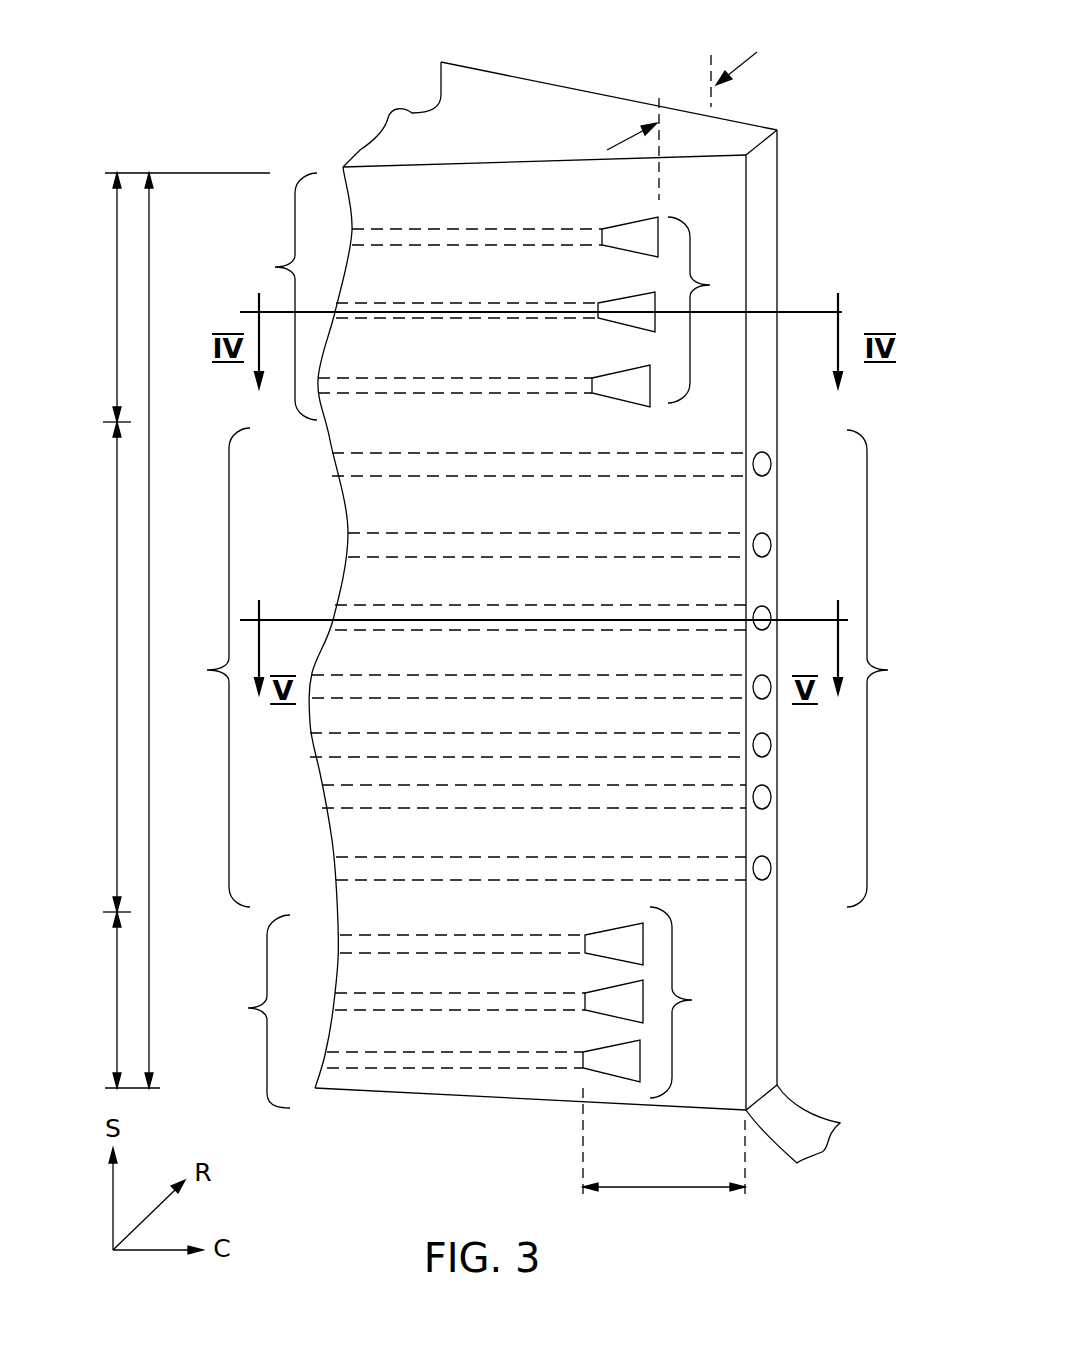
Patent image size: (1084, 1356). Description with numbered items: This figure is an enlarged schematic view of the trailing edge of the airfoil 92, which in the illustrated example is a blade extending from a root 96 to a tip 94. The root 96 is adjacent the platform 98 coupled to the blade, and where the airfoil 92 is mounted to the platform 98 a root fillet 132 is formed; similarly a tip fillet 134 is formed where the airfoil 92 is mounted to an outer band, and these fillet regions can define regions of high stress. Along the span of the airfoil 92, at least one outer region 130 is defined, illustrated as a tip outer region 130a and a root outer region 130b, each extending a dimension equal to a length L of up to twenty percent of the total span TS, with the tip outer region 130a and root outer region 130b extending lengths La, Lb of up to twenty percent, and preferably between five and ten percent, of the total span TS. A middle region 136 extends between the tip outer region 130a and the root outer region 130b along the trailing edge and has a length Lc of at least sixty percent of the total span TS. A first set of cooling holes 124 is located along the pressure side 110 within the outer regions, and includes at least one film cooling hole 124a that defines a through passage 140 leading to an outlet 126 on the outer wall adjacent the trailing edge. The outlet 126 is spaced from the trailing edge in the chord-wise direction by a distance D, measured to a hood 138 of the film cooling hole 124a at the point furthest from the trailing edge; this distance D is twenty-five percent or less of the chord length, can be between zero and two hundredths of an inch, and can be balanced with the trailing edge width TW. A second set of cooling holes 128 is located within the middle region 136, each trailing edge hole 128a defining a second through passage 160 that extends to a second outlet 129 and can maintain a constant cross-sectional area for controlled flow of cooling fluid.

The airfoil 92 is at (568, 88).
The tip 94 is at (493, 95).
The root 96 is at (493, 1097).
The platform 98 is at (788, 1135).
The pressure side 110 is at (502, 158).
The first set of cooling holes 124 is at (692, 664).
The film cooling hole 124a is at (652, 242).
The outlet 126 is at (640, 392).
The second set of cooling holes 128 is at (856, 668).
The trailing edge hole 128a is at (760, 797).
The second outlet 129 is at (762, 870).
The outer region 130 is at (404, 1045).
The tip outer region 130a is at (391, 296).
The root outer region 130b is at (371, 1033).
The root fillet 132 is at (782, 1082).
The tip fillet 134 is at (783, 127).
The middle region 136 is at (447, 667).
The hood 138 is at (585, 1063).
The through passage 140 is at (423, 237).
The second through passage 160 is at (620, 545).
The trailing edge width TW is at (748, 58).
The total span TS is at (150, 556).
The length L is at (117, 227).
The length of tip outer region La is at (117, 287).
The length of root outer region Lb is at (117, 1012).
The length of middle region Lc is at (117, 627).
The distance D is at (693, 1188).